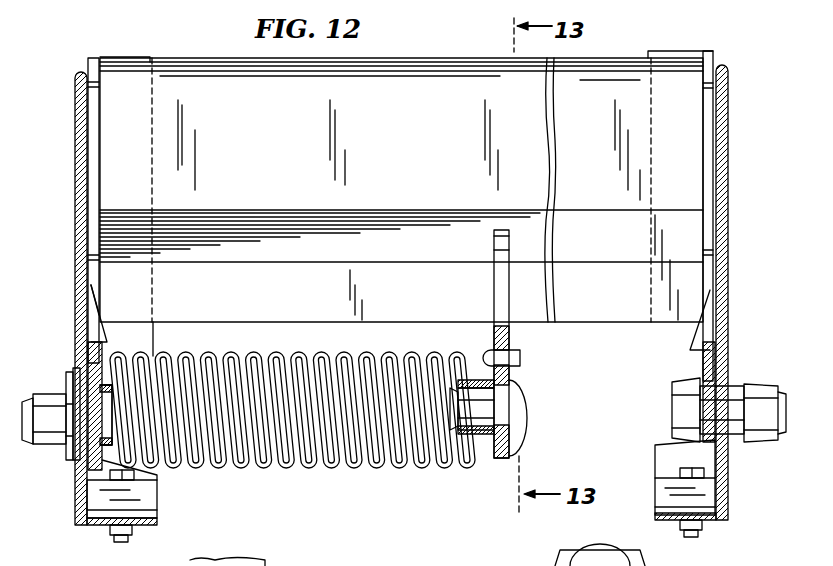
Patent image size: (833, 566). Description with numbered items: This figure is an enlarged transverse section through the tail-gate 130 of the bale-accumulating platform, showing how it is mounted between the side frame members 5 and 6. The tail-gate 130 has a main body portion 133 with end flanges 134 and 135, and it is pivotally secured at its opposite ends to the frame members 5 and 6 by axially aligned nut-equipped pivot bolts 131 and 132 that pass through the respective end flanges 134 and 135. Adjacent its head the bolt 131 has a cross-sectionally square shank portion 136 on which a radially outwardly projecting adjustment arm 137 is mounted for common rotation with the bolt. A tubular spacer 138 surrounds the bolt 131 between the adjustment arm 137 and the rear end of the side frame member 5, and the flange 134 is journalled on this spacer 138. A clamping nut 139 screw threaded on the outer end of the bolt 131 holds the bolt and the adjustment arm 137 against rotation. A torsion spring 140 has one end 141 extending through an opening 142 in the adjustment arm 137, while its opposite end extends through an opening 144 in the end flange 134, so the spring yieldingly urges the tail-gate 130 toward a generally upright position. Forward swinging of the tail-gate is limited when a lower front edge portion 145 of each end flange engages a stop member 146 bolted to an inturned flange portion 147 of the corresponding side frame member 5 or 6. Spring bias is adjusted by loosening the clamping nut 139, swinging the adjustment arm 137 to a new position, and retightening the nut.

The frame member 5 is at (76, 260).
The frame member 6 is at (728, 277).
The tail-gate 130 is at (412, 59).
The pivot bolt 131 is at (480, 410).
The pivot bolt 132 is at (782, 378).
The main body portion 133 is at (418, 149).
The end flange 134 is at (118, 337).
The end flange 135 is at (670, 345).
The square shank portion 136 is at (514, 410).
The adjustment arm 137 is at (500, 293).
The tubular spacer 138 is at (468, 446).
The clamping nut 139 is at (52, 447).
The torsion spring 140 is at (308, 462).
The spring end 141 is at (521, 360).
The opening 142 is at (506, 348).
The opening 144 is at (135, 351).
The lower front edge portion 145 is at (145, 476).
The stop member 146 is at (145, 503).
The inturned flange portion 147 is at (155, 526).